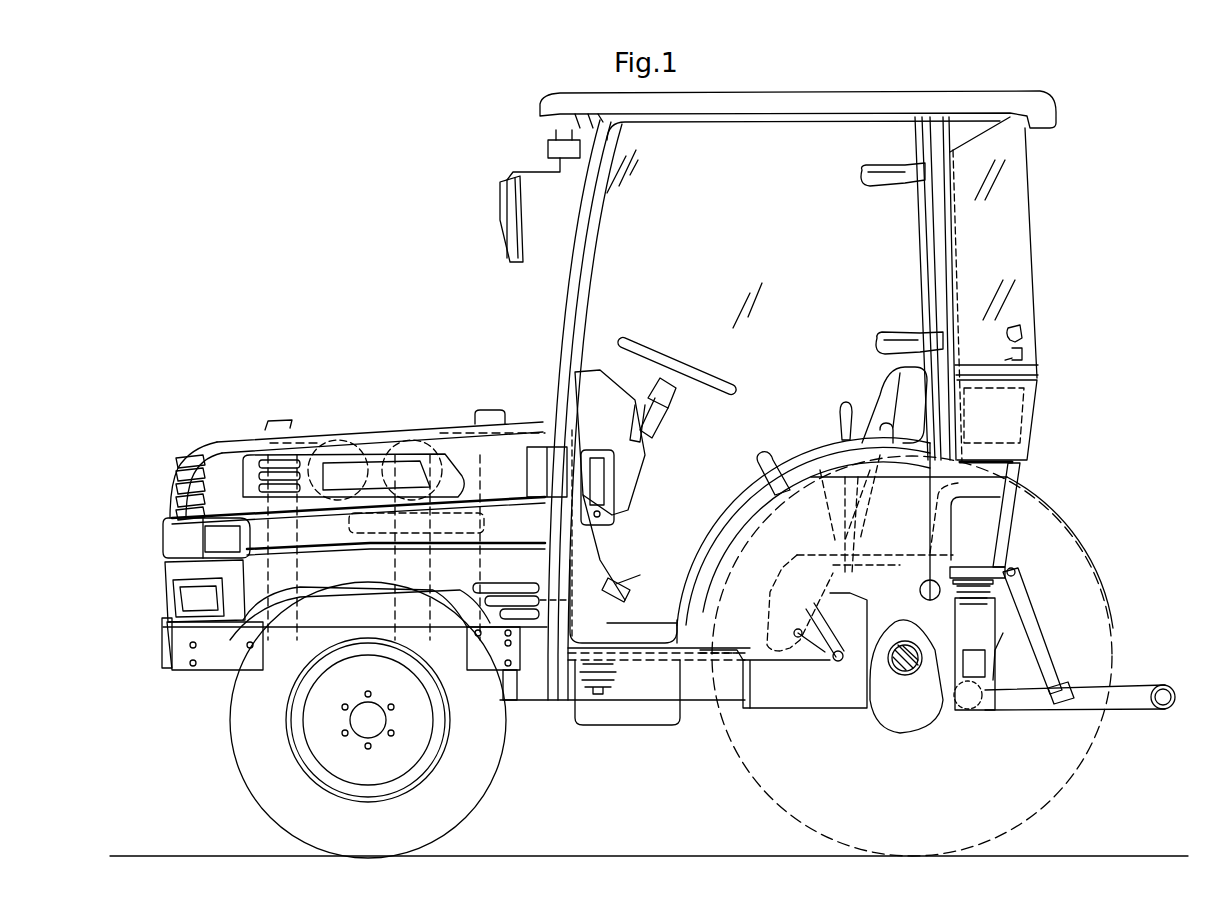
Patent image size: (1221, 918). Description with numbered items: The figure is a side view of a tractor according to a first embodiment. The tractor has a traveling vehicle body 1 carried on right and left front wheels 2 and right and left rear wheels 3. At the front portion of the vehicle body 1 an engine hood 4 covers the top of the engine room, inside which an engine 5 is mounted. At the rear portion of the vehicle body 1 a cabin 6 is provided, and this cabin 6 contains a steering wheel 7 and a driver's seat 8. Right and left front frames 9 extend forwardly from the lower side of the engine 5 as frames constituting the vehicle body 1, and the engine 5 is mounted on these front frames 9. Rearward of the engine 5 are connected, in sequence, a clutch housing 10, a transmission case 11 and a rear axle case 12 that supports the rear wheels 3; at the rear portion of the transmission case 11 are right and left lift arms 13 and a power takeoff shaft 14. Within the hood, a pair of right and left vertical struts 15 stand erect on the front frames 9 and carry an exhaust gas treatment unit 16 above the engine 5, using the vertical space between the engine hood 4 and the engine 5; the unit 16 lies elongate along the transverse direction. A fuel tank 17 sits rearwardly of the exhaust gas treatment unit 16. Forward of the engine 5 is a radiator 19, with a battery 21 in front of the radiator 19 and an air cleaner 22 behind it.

The traveling vehicle body 1 is at (165, 668).
The front wheels 2 is at (258, 778).
The rear wheels 3 is at (1082, 757).
The engine hood 4 is at (377, 420).
The engine 5 is at (470, 547).
The cabin 6 is at (548, 308).
The steering wheel 7 is at (678, 378).
The driver's seat 8 is at (872, 402).
The front frames 9 is at (215, 662).
The clutch housing 10 is at (530, 690).
The transmission case 11 is at (808, 695).
The rear axle case 12 is at (905, 668).
The lift arms 13 is at (1005, 570).
The power takeoff (PTO) shaft 14 is at (977, 690).
The vertical struts 15 is at (395, 522).
The exhaust gas treatment unit 16 is at (412, 440).
The fuel tank 17 is at (524, 440).
The radiator 19 is at (232, 490).
The battery 21 is at (200, 546).
The air cleaner 22 is at (336, 440).